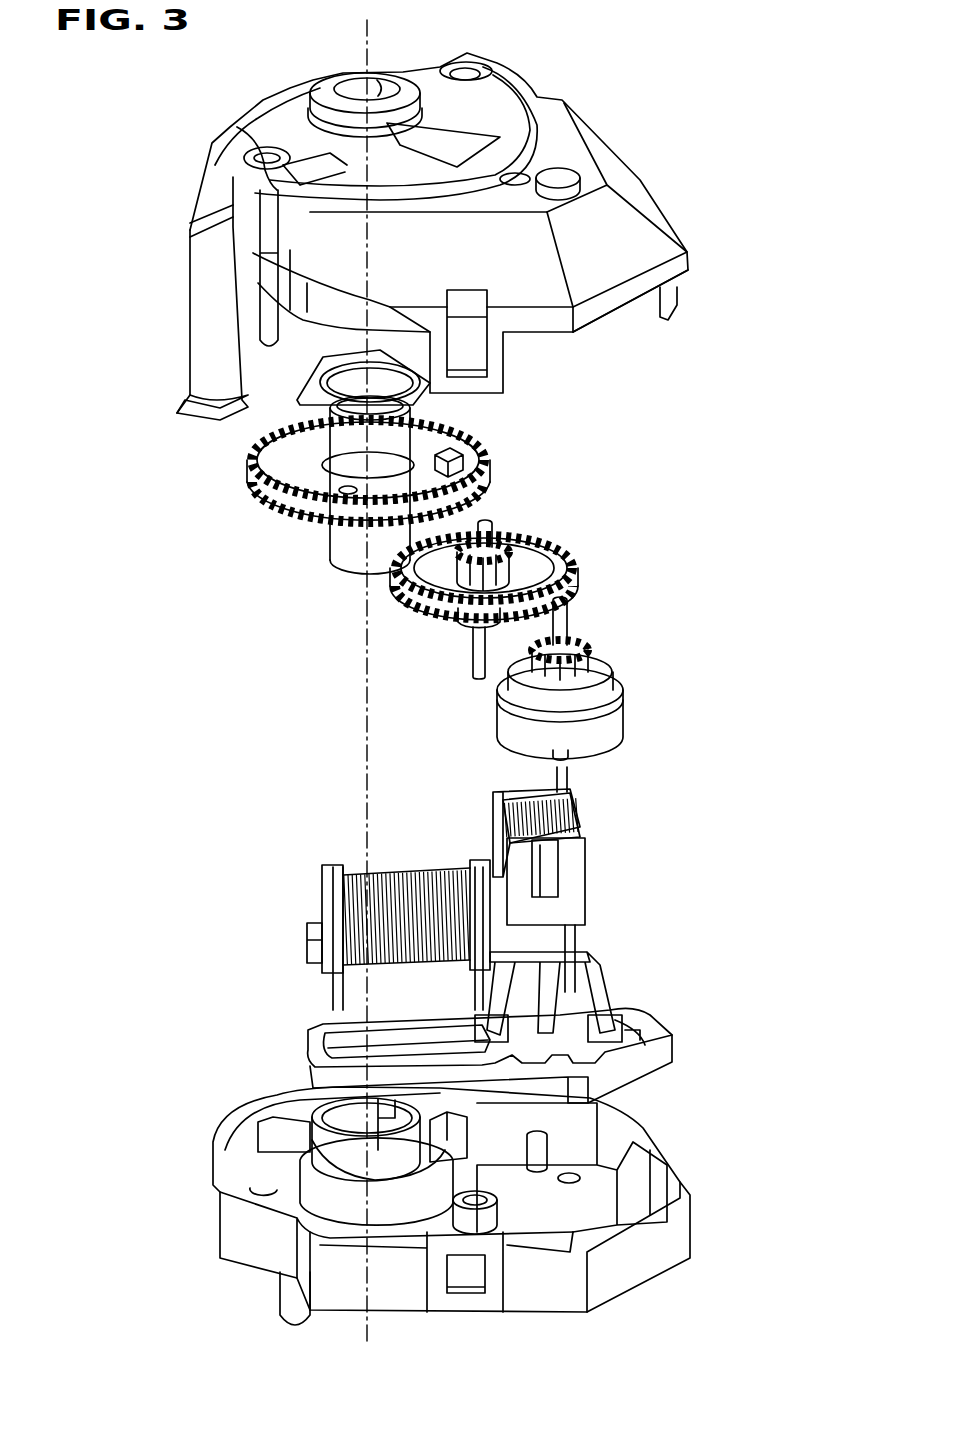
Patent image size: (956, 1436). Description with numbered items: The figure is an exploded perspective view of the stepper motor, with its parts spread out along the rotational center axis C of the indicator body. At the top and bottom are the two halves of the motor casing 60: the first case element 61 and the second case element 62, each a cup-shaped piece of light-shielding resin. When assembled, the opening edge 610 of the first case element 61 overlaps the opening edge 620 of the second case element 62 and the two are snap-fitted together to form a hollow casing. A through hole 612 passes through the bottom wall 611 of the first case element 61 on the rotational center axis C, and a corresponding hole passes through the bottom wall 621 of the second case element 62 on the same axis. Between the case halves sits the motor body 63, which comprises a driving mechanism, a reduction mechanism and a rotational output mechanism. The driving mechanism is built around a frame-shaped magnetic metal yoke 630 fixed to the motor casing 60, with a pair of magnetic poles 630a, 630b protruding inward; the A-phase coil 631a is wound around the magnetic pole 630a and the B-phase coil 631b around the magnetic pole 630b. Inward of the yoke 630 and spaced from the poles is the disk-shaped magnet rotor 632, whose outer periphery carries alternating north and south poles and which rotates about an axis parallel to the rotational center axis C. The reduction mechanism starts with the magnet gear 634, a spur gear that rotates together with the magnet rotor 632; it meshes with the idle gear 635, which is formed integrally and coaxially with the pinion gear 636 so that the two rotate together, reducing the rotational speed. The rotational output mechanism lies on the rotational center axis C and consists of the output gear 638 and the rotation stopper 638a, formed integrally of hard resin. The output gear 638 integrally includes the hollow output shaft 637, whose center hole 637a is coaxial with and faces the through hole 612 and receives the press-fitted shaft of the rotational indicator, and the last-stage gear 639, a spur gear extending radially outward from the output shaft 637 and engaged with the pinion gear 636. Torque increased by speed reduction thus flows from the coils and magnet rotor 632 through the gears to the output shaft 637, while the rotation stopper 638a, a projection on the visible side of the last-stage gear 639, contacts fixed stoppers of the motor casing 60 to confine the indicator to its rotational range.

The motor casing 60 is at (486, 219).
The first case element 61 is at (486, 219).
The second case element 62 is at (515, 1226).
The opening edge 610 is at (620, 315).
The bottom wall 611 is at (292, 110).
The through hole 612 is at (385, 88).
The opening edge 620 is at (482, 1226).
The bottom wall 621 is at (442, 1225).
The motor body 63 is at (512, 460).
The yoke 630 is at (462, 1012).
The magnetic pole 630a is at (357, 1050).
The magnetic pole 630b is at (545, 1000).
The A-phase coil 631a is at (358, 872).
The B-phase coil 631b is at (580, 830).
The magnet rotor 632 is at (610, 718).
The magnet gear 634 is at (590, 650).
The idle gear 635 is at (545, 568).
The pinion gear 636 is at (490, 536).
The output shaft 637 is at (348, 444).
The center hole 637a is at (315, 362).
The output gear 638 is at (331, 479).
The rotation stopper 638a is at (458, 445).
The last-stage gear 639 is at (297, 487).
The rotational center axis C is at (354, 716).